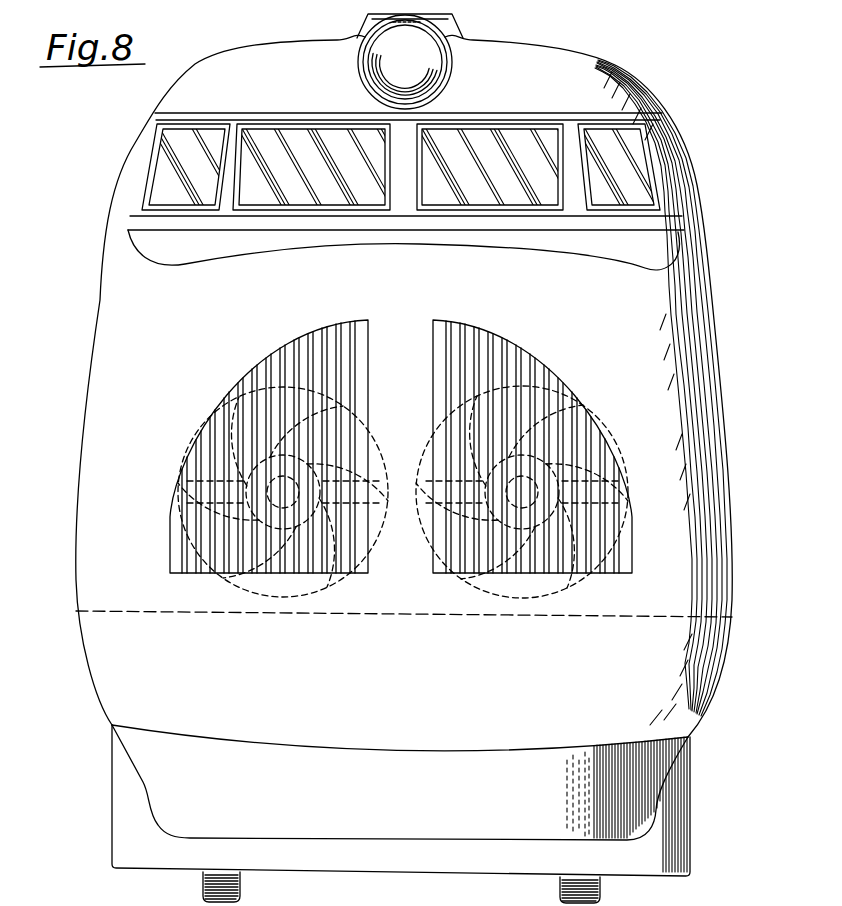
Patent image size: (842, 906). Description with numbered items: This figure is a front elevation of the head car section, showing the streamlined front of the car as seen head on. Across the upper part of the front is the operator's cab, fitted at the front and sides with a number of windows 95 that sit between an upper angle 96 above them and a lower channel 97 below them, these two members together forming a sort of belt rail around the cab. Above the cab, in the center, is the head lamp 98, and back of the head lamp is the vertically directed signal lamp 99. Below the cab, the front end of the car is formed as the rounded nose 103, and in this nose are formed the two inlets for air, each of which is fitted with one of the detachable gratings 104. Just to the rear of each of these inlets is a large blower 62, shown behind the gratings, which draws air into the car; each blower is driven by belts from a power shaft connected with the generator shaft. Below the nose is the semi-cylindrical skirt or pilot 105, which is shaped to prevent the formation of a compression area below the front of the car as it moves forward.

The blower 62 is at (223, 430).
The windows 95 is at (267, 135).
The upper angle 96 is at (640, 118).
The lower channel 97 is at (673, 230).
The head lamp 98 is at (387, 47).
The signal lamp 99 is at (427, 15).
The rounded nose 103 is at (383, 598).
The detachable gratings 104 is at (197, 532).
The skirt 105 is at (605, 807).